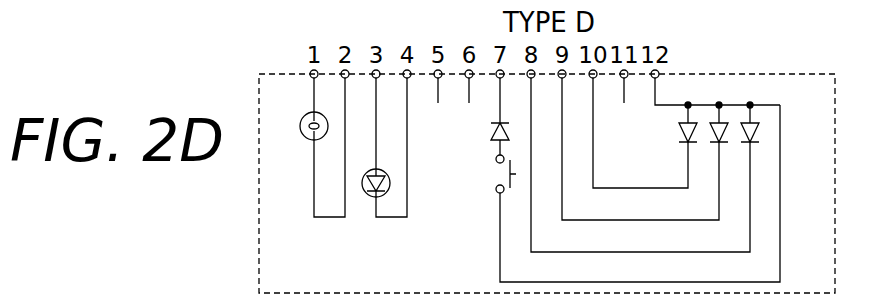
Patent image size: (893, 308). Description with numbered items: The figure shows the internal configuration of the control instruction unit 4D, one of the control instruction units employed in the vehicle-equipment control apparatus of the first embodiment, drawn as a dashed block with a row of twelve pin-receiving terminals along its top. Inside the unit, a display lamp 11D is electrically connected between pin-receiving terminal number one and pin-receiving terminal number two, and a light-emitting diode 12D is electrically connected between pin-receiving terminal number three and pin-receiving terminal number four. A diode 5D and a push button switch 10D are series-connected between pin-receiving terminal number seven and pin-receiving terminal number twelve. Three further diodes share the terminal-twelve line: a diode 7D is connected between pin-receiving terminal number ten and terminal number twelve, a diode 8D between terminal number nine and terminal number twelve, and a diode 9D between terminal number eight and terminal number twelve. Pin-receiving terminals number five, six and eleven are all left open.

The control instruction unit 4D is at (754, 74).
The diode 5D is at (491, 130).
The diode 7D is at (695, 146).
The diode 8D is at (726, 146).
The diode 9D is at (757, 144).
The push button switch 10D is at (495, 172).
The display lamp 11D is at (306, 140).
The light-emitting diode 12D is at (365, 200).